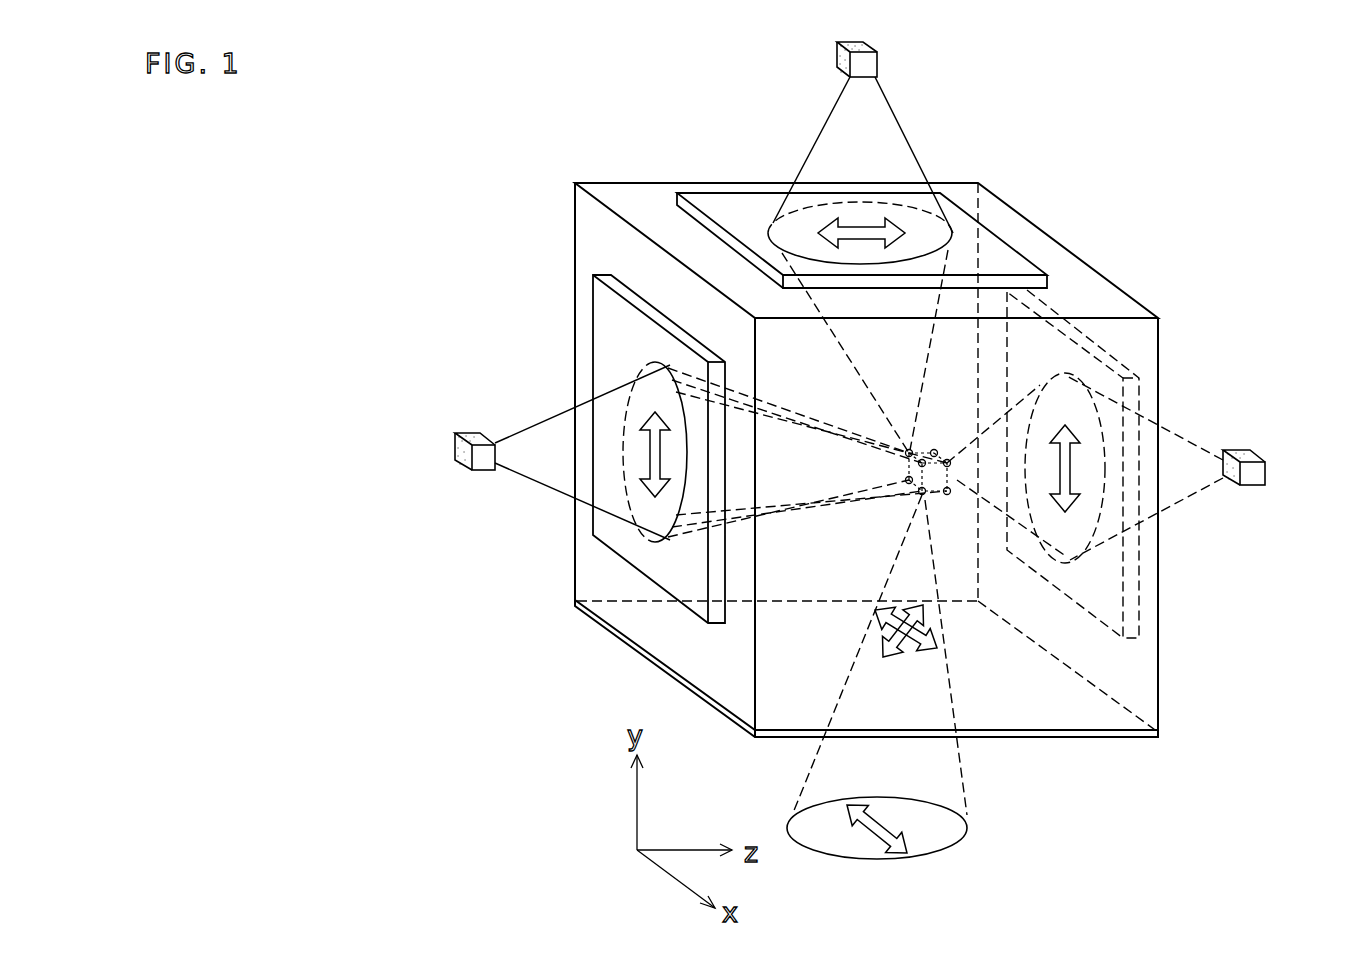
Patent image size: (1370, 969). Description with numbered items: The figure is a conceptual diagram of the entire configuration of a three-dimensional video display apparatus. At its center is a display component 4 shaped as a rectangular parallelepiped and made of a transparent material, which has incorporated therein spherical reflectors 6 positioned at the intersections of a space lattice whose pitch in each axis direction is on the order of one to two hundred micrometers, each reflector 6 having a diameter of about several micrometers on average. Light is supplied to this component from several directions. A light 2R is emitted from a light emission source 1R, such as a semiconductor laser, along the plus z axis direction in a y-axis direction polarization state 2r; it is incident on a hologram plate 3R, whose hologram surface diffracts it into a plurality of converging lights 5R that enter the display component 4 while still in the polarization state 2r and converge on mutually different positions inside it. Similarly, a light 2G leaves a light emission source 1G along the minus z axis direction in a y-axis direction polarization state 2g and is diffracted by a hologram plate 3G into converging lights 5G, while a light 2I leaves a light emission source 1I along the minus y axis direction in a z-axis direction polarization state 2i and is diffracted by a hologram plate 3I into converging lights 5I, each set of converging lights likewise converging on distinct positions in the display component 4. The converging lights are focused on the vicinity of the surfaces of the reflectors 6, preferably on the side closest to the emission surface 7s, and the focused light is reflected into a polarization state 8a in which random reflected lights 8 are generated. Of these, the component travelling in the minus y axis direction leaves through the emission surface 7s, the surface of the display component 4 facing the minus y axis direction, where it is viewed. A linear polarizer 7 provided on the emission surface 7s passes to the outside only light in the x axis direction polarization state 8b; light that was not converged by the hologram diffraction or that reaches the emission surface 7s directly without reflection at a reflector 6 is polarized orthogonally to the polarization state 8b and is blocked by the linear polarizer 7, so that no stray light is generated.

The light emission source 1I is at (878, 63).
The light 2I is at (897, 128).
The z-axis direction polarization state 2i is at (858, 232).
The hologram plate 3I is at (990, 248).
The display component 4 is at (1067, 268).
The converging lights 5G is at (1025, 400).
The converging lights 5R is at (787, 422).
The converging lights 5I is at (873, 402).
The reflector 6 is at (932, 453).
The y-axis direction polarization state 2r is at (653, 453).
The light emission source 1R is at (462, 466).
The light 2R is at (528, 470).
The hologram plate 3R is at (668, 575).
The light 2G is at (1180, 437).
The light emission source 1G is at (1262, 469).
The y-axis direction polarization state 2g is at (1087, 498).
The hologram plate 3G is at (1137, 585).
The random reflected lights 8 is at (965, 778).
The polarization state 8a is at (893, 650).
The linear polarizer 7 is at (1138, 737).
The emission surface 7s is at (1068, 712).
The x axis direction polarization state 8b is at (873, 832).